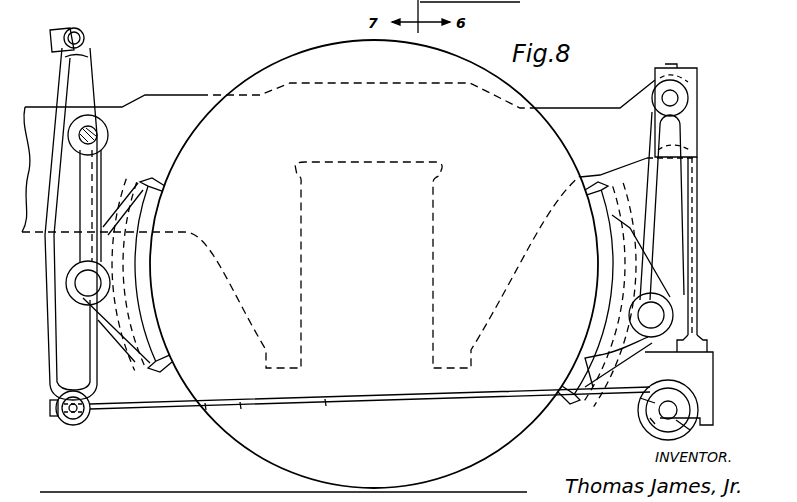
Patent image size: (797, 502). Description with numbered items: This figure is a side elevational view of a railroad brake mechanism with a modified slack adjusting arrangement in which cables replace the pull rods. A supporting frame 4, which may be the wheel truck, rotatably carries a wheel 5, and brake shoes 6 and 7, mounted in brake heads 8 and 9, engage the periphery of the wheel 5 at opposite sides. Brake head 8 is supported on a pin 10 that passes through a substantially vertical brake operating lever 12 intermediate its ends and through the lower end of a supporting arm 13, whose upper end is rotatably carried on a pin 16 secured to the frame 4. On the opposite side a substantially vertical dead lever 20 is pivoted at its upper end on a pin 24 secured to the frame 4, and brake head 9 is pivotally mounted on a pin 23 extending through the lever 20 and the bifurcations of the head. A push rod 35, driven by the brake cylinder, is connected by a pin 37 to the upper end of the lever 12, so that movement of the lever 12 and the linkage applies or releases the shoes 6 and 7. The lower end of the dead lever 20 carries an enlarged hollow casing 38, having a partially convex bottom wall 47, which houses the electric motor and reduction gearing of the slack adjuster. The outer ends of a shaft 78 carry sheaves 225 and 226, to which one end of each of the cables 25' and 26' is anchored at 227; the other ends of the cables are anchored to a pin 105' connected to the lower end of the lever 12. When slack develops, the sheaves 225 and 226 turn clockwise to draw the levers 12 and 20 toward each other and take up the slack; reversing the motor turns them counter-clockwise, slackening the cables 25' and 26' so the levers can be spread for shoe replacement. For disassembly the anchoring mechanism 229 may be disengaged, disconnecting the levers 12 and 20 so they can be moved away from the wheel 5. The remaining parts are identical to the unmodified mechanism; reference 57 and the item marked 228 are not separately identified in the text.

The supporting frame 4 is at (170, 100).
The wheel 5 is at (510, 437).
The brake shoe 6 is at (150, 198).
The brake shoe 7 is at (598, 243).
The brake head 8 is at (105, 330).
The brake head 9 is at (622, 222).
The pin 10 is at (80, 283).
The brake operating lever 12 is at (55, 338).
The supporting arm 13 is at (102, 186).
The pin 16 is at (97, 135).
The dead lever 20 is at (697, 233).
The pin 23 is at (655, 315).
The pin 24 is at (680, 98).
The cable 25' is at (370, 421).
The cable 26' is at (234, 422).
The push rod 35 is at (60, 34).
The pin 37 is at (86, 38).
The casing 38 is at (679, 388).
The bottom wall 47 is at (470, 0).
The section line 57 is at (228, 0).
The shaft 78 is at (672, 410).
The pin 105' is at (70, 435).
The sheave 225 is at (690, 430).
The sheave 226 is at (640, 398).
The cable anchor 227 is at (650, 418).
The pin 228 is at (52, 414).
The anchoring mechanism 229 is at (50, 403).